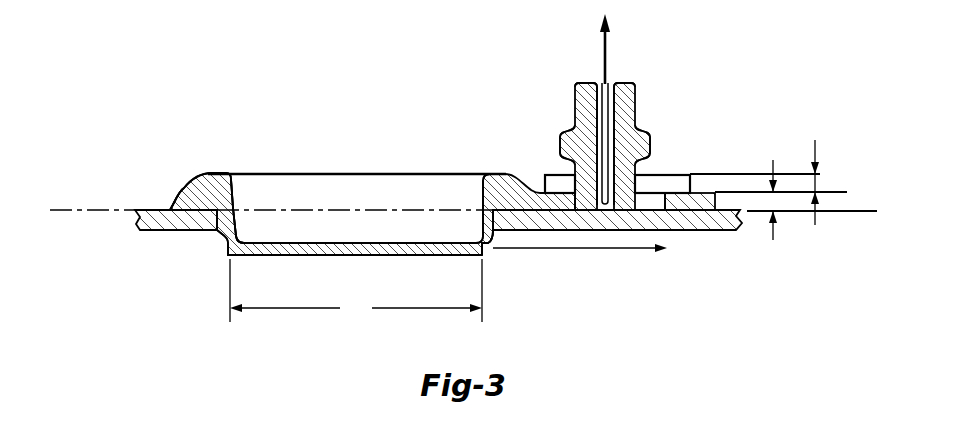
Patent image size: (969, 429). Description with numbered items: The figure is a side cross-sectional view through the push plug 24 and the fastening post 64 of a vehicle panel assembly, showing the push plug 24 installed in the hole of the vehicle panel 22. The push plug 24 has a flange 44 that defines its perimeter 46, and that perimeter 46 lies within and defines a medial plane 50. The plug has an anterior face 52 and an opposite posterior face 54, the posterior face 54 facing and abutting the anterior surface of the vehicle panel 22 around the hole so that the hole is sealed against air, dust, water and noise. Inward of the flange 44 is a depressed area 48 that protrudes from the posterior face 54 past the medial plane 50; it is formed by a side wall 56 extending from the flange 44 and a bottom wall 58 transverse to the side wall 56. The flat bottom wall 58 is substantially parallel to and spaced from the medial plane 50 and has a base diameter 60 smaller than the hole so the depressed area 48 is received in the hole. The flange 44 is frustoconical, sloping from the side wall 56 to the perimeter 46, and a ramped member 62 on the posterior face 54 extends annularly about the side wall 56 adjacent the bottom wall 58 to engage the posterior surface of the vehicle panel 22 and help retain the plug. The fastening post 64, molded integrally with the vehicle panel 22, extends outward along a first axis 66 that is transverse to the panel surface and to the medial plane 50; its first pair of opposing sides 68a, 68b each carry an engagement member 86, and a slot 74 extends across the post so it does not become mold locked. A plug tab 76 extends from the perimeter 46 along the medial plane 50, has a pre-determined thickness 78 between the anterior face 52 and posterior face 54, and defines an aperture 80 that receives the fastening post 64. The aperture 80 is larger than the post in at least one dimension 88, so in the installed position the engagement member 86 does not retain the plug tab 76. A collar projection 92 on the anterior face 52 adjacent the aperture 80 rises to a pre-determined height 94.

The vehicle panel 22 is at (723, 232).
The push plug 24 is at (412, 162).
The flange 44 is at (205, 183).
The perimeter 46 is at (162, 207).
The depressed area 48 is at (317, 200).
The medial plane 50 is at (87, 200).
The anterior face 52 is at (202, 162).
The posterior face 54 is at (254, 264).
The side wall 56 is at (484, 218).
The bottom wall 58 is at (385, 256).
The base diameter 60 is at (356, 290).
The ramped member 62 is at (490, 233).
The fastening post 64 is at (586, 90).
The first axis 66 is at (608, 37).
The first side of the first pair of opposing sides 68a is at (564, 99).
The second side of the first pair of opposing sides 68b is at (646, 101).
The slot 74 is at (599, 86).
The plug tab 76 is at (703, 204).
The pre-determined thickness 78 is at (773, 240).
The aperture 80 is at (659, 214).
The engagement member 86 is at (565, 135).
The at least one dimension 88 is at (578, 250).
The collar projection 92 is at (650, 182).
The pre-determined height 94 is at (815, 140).